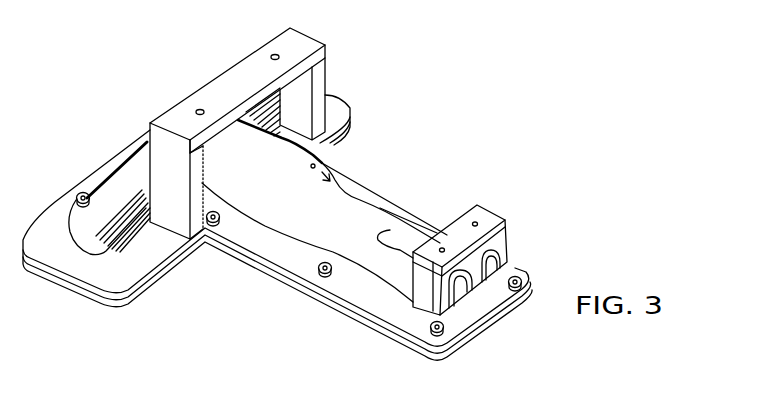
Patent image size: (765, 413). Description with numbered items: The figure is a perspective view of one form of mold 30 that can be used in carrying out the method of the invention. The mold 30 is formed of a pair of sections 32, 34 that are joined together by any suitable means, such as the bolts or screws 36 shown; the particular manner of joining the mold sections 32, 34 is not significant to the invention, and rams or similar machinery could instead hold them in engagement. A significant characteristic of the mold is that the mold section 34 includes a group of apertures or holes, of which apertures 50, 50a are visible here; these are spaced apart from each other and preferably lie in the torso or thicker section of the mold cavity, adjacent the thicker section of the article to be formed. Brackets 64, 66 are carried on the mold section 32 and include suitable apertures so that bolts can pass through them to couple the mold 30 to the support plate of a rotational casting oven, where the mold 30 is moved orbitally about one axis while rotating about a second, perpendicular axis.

The mold 30 is at (398, 192).
The mold section 32 is at (477, 317).
The mold section 34 is at (443, 361).
The bolts or screws 36 is at (207, 226).
The aperture or hole 50 is at (281, 195).
The aperture or hole 50a is at (322, 162).
The bracket 64 is at (481, 211).
The bracket 66 is at (318, 39).